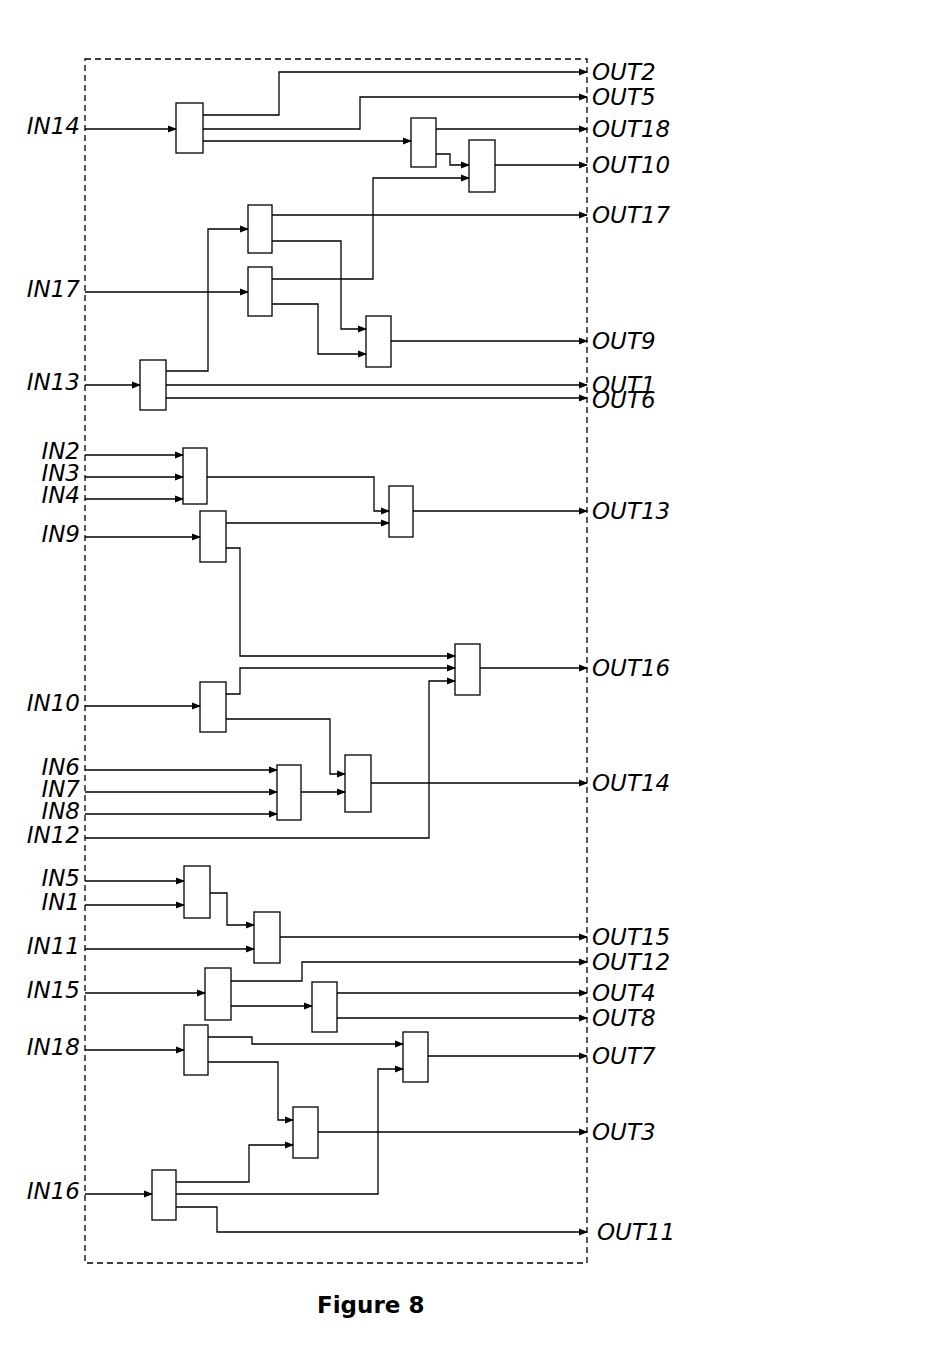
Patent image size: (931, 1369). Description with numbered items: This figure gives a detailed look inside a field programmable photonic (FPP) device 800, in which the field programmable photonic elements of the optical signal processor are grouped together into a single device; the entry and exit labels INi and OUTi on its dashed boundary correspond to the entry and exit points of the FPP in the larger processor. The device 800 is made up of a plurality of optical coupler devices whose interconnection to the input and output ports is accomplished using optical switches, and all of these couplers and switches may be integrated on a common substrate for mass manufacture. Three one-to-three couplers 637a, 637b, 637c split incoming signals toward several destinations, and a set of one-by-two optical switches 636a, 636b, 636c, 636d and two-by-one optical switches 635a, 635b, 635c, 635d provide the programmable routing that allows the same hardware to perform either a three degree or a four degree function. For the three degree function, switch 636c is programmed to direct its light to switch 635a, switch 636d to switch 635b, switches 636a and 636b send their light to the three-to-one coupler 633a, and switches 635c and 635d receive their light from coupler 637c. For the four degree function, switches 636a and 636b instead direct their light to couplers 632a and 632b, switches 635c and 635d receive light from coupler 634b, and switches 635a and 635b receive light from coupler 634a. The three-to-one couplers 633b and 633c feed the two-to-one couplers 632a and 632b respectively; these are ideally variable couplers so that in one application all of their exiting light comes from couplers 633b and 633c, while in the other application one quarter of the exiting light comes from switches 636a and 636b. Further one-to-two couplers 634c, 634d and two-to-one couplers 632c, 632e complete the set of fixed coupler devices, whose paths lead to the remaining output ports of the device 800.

The field programmable photonic device 800 is at (133, 45).
The optical coupler 637a is at (152, 360).
The optical coupler 637b is at (190, 103).
The optical coupler 637c is at (174, 1162).
The 1 by 2 optical switch 636a is at (200, 547).
The 1 by 2 optical switch 636b is at (200, 722).
The 1 by 2 optical switch 636c is at (262, 205).
The 1 by 2 optical switch 636d is at (428, 118).
The 2 by 1 optical switch 635a is at (384, 317).
The 2 by 1 optical switch 635b is at (470, 192).
The 2 by 1 optical switch 635c is at (410, 1085).
The 2 by 1 optical switch 635d is at (301, 1158).
The optical coupler 634a is at (255, 316).
The optical coupler 634b is at (207, 1078).
The optical coupler 634c is at (330, 983).
The optical coupler 634d is at (205, 982).
The optical coupler 633a is at (467, 644).
The optical coupler 633b is at (190, 448).
The optical coupler 633c is at (300, 751).
The optical coupler 632a is at (398, 537).
The optical coupler 632b is at (366, 746).
The optical coupler 632c is at (210, 854).
The optical coupler 632e is at (262, 907).